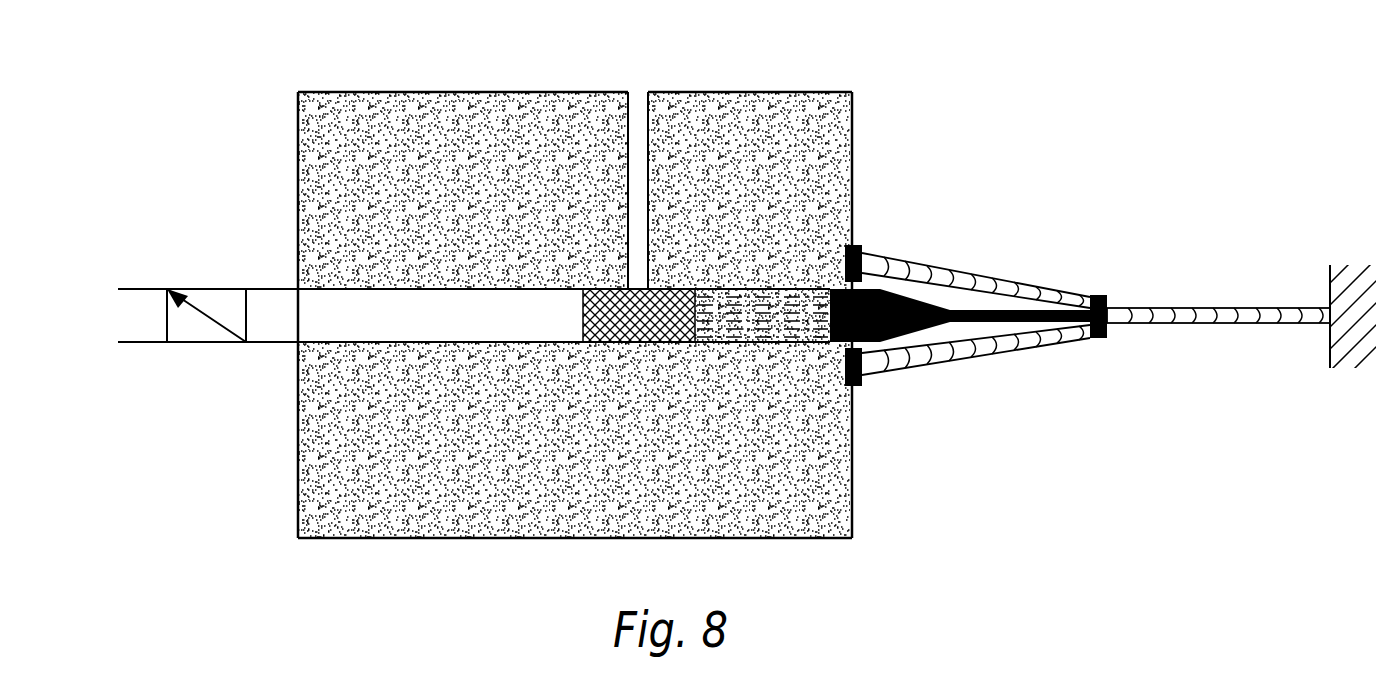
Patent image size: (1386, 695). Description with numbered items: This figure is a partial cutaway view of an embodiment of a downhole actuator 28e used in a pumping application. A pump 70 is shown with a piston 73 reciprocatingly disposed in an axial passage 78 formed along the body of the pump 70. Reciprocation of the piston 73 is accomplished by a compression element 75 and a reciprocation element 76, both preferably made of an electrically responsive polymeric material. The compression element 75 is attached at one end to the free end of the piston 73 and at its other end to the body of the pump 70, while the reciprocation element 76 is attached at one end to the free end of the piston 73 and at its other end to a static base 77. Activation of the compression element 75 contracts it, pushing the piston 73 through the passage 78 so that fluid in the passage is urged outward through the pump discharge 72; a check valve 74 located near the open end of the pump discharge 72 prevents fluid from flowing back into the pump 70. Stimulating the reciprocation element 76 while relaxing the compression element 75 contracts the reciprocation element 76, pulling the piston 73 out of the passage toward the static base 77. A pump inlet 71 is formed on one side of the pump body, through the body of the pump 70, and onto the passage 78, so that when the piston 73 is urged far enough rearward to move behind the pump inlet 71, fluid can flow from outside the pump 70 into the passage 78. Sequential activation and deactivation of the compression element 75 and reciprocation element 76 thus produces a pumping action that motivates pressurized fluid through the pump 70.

The pump 70 is at (494, 282).
The pump inlet 71 is at (640, 102).
The pump discharge 72 is at (105, 312).
The piston 73 is at (923, 330).
The check valve 74 is at (200, 343).
The compression element 75 is at (990, 287).
The reciprocation element 76 is at (1197, 308).
The static base 77 is at (1330, 352).
The axial passage 78 is at (447, 325).
The downhole actuator 28e is at (942, 247).